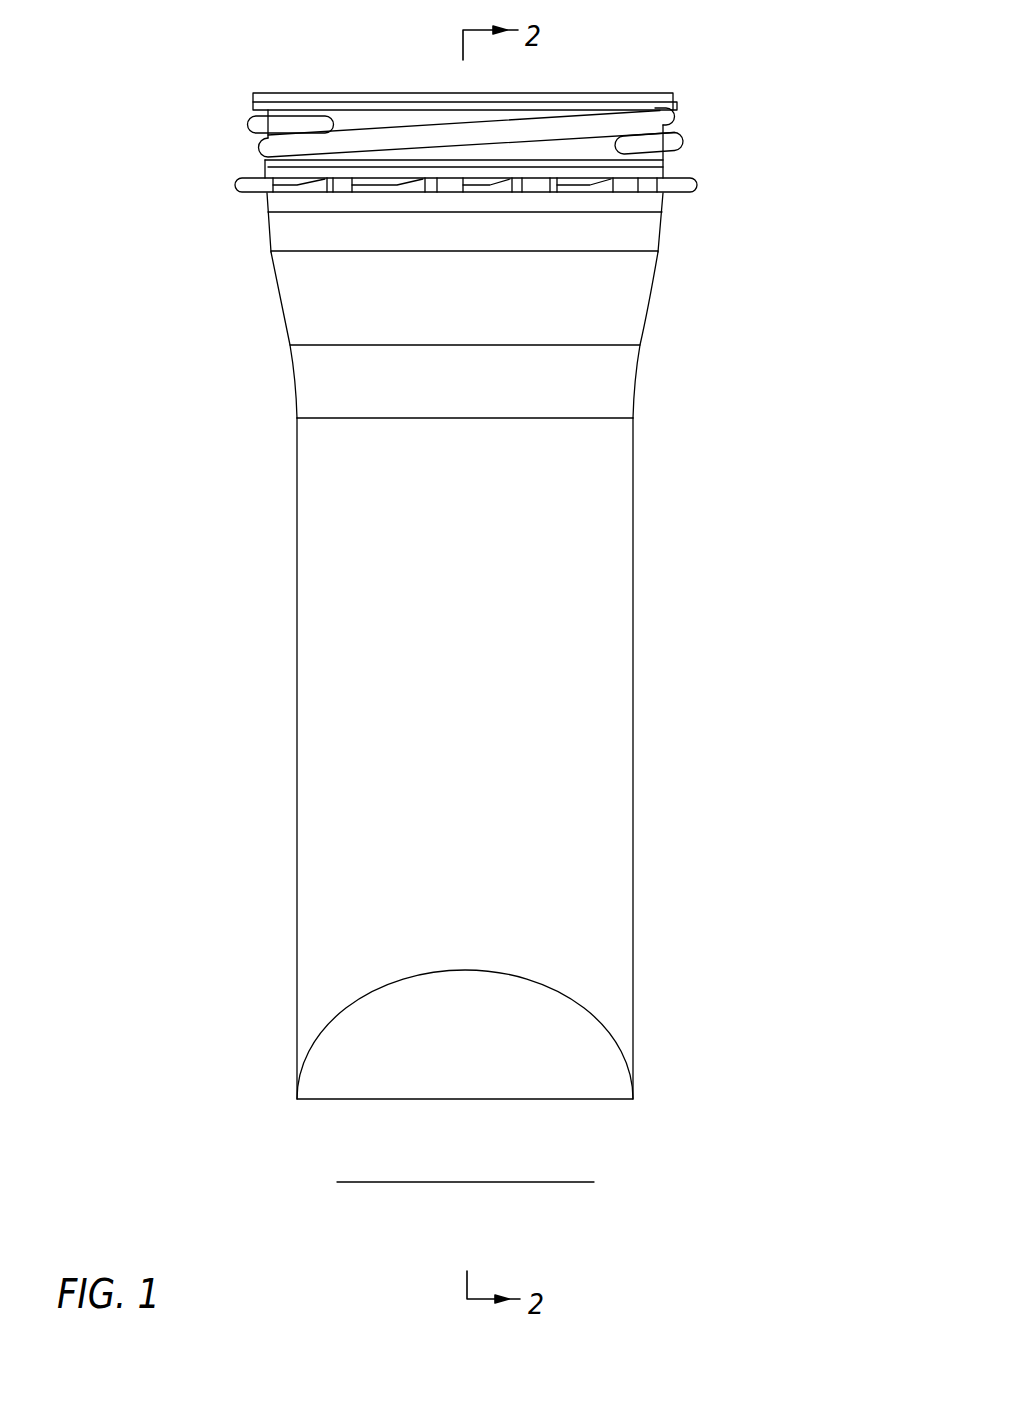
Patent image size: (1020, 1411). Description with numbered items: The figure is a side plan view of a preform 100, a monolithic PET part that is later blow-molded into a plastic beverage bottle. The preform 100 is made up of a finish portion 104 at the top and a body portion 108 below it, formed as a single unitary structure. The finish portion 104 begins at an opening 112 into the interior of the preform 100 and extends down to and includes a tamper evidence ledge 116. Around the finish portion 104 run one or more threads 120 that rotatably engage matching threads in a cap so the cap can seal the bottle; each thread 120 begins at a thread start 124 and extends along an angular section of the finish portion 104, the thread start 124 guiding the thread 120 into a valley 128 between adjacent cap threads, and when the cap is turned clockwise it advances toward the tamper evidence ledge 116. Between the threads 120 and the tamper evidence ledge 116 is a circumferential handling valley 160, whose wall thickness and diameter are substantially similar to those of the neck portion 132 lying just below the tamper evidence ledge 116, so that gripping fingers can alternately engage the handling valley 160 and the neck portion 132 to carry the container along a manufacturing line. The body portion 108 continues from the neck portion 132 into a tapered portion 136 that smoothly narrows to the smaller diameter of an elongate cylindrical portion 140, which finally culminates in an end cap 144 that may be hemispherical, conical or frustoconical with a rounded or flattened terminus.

The preform 100 is at (718, 1046).
The finish portion 104 is at (205, 91).
The body portion 108 is at (205, 1240).
The opening 112 is at (390, 93).
The tamper evidence ledge 116 is at (682, 187).
The threads 120 is at (683, 140).
The thread start 124 is at (333, 120).
The valley 128 is at (288, 134).
The neck portion 132 is at (282, 201).
The tapered portion 136 is at (648, 302).
The cylindrical portion 140 is at (297, 832).
The end cap 144 is at (461, 1230).
The handling valley 160 is at (663, 167).